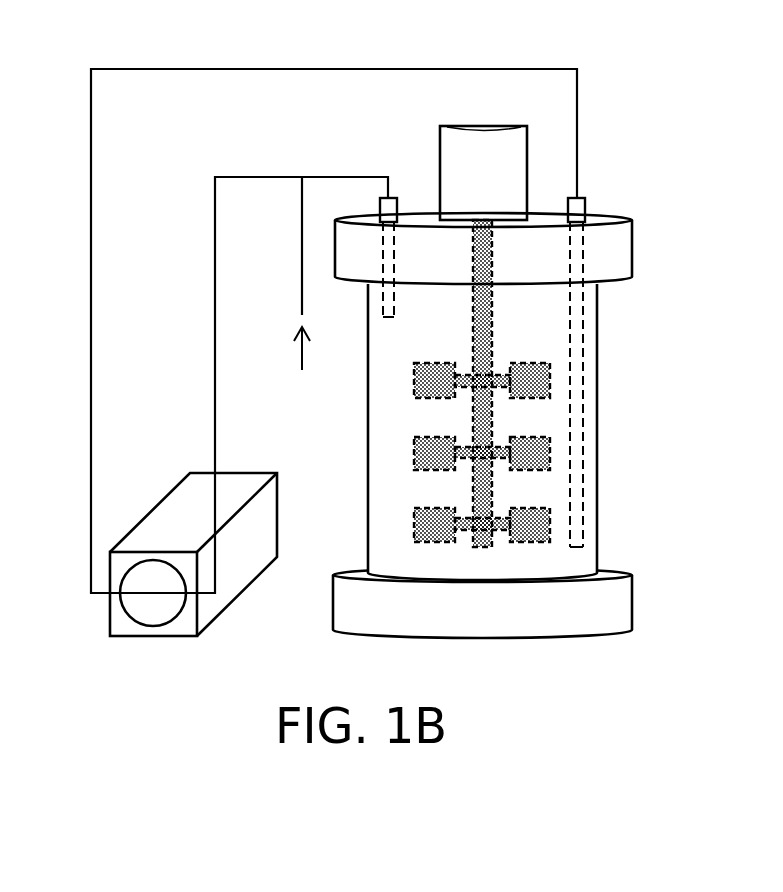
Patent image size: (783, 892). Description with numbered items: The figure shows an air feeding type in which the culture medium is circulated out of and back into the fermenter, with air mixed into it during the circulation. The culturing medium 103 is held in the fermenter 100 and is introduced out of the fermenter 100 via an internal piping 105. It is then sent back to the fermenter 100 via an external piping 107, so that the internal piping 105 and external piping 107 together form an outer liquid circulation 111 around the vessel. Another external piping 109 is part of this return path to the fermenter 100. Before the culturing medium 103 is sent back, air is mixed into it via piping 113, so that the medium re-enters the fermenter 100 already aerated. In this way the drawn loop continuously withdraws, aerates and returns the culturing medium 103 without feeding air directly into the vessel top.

The fermenter 100 is at (633, 600).
The culturing medium 103 is at (382, 474).
The internal piping 105 is at (585, 207).
The external piping 107 is at (253, 69).
The another external piping 109 is at (398, 205).
The outer liquid circulation 111 is at (188, 498).
The piping 113 is at (302, 218).